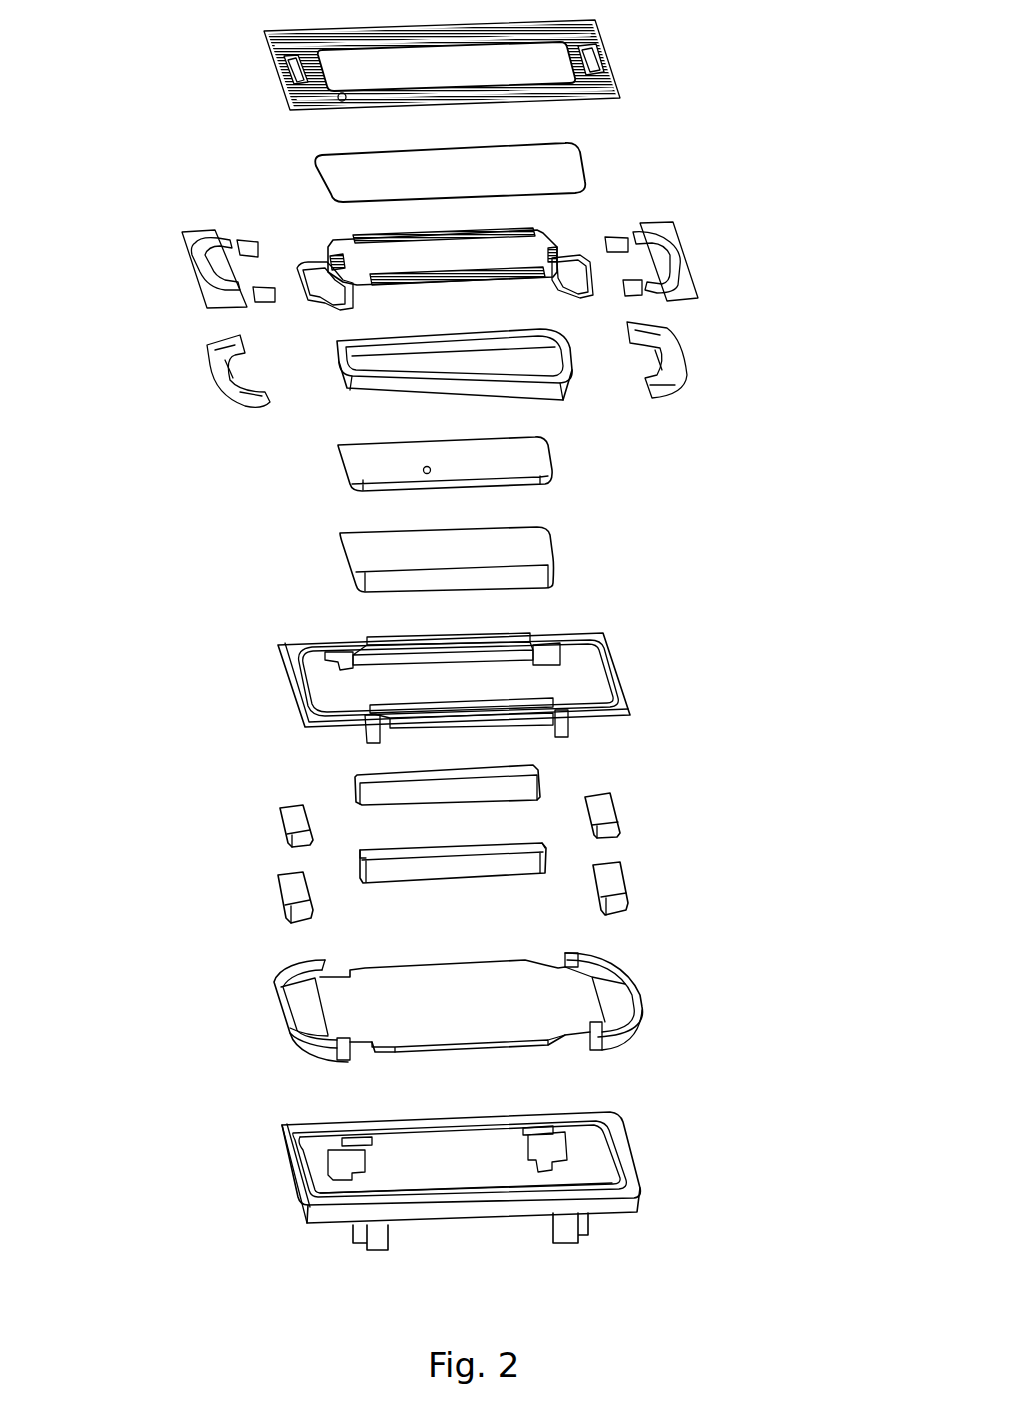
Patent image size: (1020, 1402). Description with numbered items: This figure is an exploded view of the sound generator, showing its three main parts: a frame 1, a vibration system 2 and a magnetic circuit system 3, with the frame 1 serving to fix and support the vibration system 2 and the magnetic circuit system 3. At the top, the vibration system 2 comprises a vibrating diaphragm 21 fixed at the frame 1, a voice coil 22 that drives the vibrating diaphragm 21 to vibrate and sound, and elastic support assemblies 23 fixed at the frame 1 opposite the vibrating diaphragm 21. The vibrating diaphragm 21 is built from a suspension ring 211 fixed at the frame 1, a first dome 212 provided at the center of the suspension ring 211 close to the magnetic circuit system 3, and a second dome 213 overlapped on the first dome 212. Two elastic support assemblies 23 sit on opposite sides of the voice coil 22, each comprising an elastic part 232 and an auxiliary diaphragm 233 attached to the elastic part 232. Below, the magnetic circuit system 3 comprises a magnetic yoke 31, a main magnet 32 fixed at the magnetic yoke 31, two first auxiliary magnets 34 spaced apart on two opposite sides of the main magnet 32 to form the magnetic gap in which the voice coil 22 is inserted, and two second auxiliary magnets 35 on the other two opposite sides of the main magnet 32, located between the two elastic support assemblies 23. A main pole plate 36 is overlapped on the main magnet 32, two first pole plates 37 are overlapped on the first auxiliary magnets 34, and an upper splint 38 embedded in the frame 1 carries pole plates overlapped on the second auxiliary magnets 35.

The frame 1 is at (627, 1158).
The vibration system 2 is at (864, 130).
The vibrating diaphragm 21 is at (795, 53).
The suspension ring 211 is at (570, 70).
The first dome 212 is at (520, 256).
The second dome 213 is at (555, 172).
The voice coil 22 is at (527, 383).
The elastic support assemblies 23 is at (793, 267).
The elastic part 232 is at (688, 274).
The auxiliary diaphragm 233 is at (667, 362).
The magnetic circuit system 3 is at (128, 470).
The magnetic yoke 31 is at (358, 1018).
The main magnet 32 is at (375, 555).
The first auxiliary magnets 34 is at (297, 890).
The second auxiliary magnets 35 is at (387, 776).
The main pole plate 36 is at (380, 470).
The first pole plates 37 is at (298, 822).
The upper splint 38 is at (297, 683).